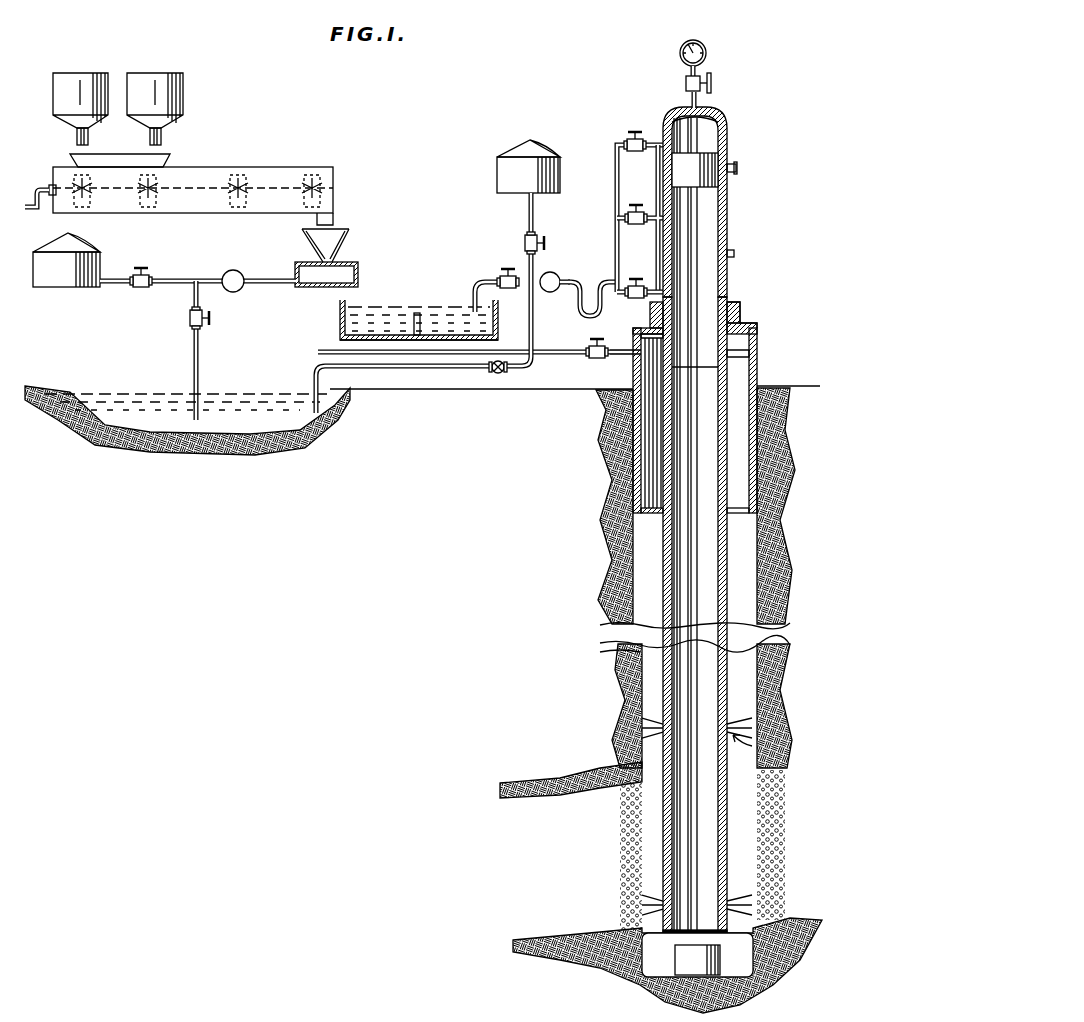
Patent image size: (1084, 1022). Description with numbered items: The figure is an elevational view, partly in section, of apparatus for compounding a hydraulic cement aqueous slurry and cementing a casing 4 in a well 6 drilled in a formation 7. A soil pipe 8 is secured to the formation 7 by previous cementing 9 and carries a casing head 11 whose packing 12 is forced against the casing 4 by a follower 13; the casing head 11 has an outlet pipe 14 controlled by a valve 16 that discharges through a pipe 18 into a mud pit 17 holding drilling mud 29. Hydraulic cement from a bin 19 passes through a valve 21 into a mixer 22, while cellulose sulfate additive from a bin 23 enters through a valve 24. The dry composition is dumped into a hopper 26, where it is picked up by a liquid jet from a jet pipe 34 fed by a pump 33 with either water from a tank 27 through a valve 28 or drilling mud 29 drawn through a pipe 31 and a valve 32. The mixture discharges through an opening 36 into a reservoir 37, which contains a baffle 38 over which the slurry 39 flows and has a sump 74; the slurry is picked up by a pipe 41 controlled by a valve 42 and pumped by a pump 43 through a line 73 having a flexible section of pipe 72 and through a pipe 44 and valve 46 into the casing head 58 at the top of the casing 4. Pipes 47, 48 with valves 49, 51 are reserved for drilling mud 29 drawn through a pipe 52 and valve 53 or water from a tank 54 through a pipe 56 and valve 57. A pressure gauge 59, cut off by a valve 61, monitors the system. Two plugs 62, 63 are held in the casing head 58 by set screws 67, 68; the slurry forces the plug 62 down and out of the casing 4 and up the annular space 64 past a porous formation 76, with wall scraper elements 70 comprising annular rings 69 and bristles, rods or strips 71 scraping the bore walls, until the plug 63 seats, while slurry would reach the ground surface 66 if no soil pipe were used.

The casing 4 is at (640, 645).
The well 6 is at (640, 626).
The formation 7 is at (618, 558).
The soil pipe 8 is at (757, 366).
The cementing 9 is at (614, 490).
The casing head 11 is at (742, 315).
The packing 12 is at (650, 316).
The follower 13 is at (740, 303).
The outlet pipe 14 is at (615, 350).
The valve 16 is at (590, 347).
The mud pit 17 is at (258, 420).
The pipe 18 is at (318, 350).
The bin 19 is at (56, 100).
The valve 21 is at (77, 139).
The mixer 22 is at (208, 167).
The bin 23 is at (185, 103).
The valve 24 is at (162, 138).
The hopper 26 is at (345, 228).
The tank 27 is at (101, 262).
The valve 28 is at (141, 292).
The drilling mud 29 is at (125, 396).
The pipe 31 is at (193, 364).
The valve 32 is at (189, 322).
The pump 33 is at (234, 270).
The jet pipe 34 is at (272, 272).
The opening 36 is at (360, 273).
The reservoir 37 is at (378, 303).
The baffle 38 is at (421, 316).
The slurry 39 is at (400, 318).
The pipe 41 is at (478, 280).
The valve 42 is at (516, 268).
The pump 43 is at (556, 269).
The pipe 44 is at (659, 216).
The valve 46 is at (636, 206).
The pipe 47 is at (658, 291).
The pipe 48 is at (652, 143).
The valve 49 is at (636, 278).
The valve 51 is at (624, 138).
The pipe 52 is at (534, 330).
The valve 53 is at (512, 372).
The tank 54 is at (561, 186).
The pipe 56 is at (529, 209).
The valve 57 is at (545, 244).
The casing head 58 is at (726, 113).
The pressure gauge 59 is at (707, 55).
The valve 61 is at (712, 83).
The plug 62 is at (720, 969).
The plug 63 is at (721, 160).
The annular space 64 is at (650, 861).
The ground surface 66 is at (605, 390).
The set screws 67 is at (734, 253).
The set screws 68 is at (737, 173).
The annular rings 69 is at (752, 726).
The wall scraper elements 70 is at (755, 746).
The bristles, rods or strips 71 is at (645, 722).
The flexible section of pipe 72 is at (594, 280).
The line 73 is at (568, 273).
The sump 74 is at (496, 339).
The porous formation 76 is at (530, 774).